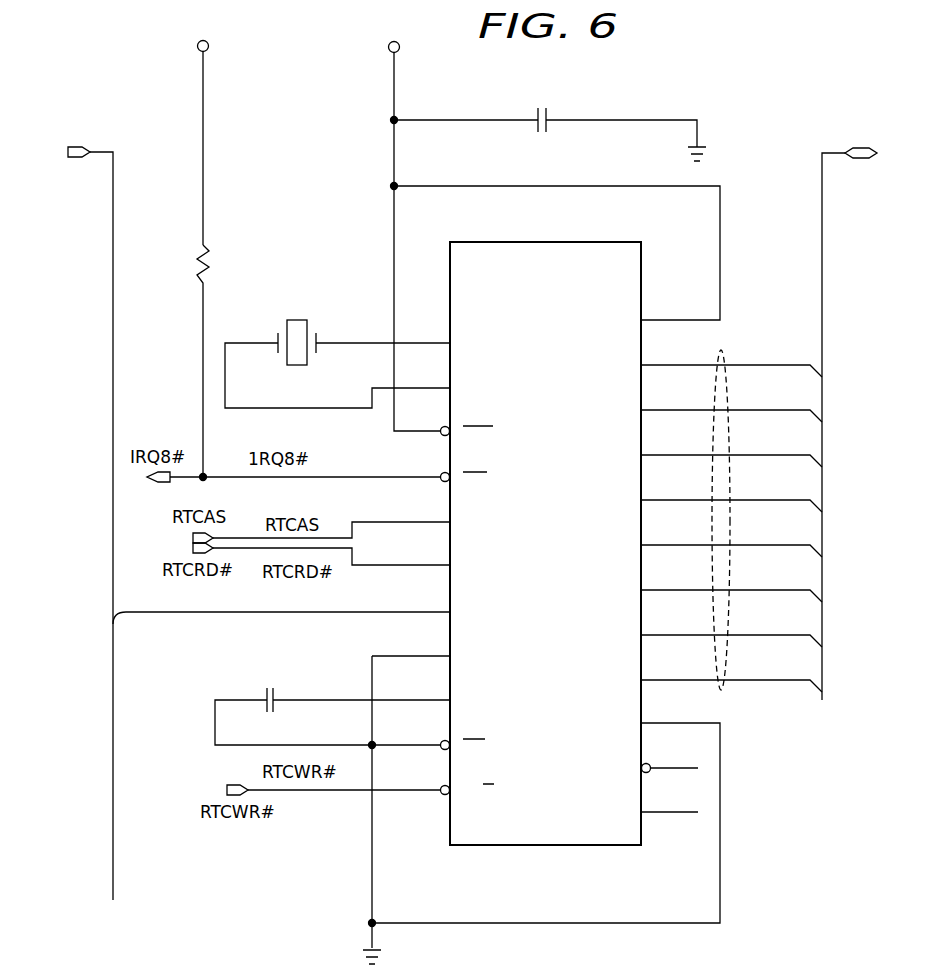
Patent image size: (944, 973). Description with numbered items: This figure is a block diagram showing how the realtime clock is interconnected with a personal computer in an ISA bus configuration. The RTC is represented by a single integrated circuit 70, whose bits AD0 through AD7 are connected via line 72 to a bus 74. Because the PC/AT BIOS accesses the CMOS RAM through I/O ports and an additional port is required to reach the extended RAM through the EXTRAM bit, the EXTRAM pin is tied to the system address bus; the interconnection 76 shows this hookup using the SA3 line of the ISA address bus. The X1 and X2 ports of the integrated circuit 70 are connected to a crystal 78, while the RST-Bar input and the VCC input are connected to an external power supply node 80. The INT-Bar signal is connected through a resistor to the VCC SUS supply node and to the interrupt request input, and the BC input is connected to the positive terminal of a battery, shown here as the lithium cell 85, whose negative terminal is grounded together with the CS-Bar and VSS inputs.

The integrated circuit 70 is at (548, 848).
The line 72 is at (721, 690).
The bus 74 is at (822, 278).
The interconnection 76 is at (112, 372).
The crystal 78 is at (296, 285).
The external power supply node 80 is at (397, 112).
The lithium cell battery BAT1 85 is at (260, 690).